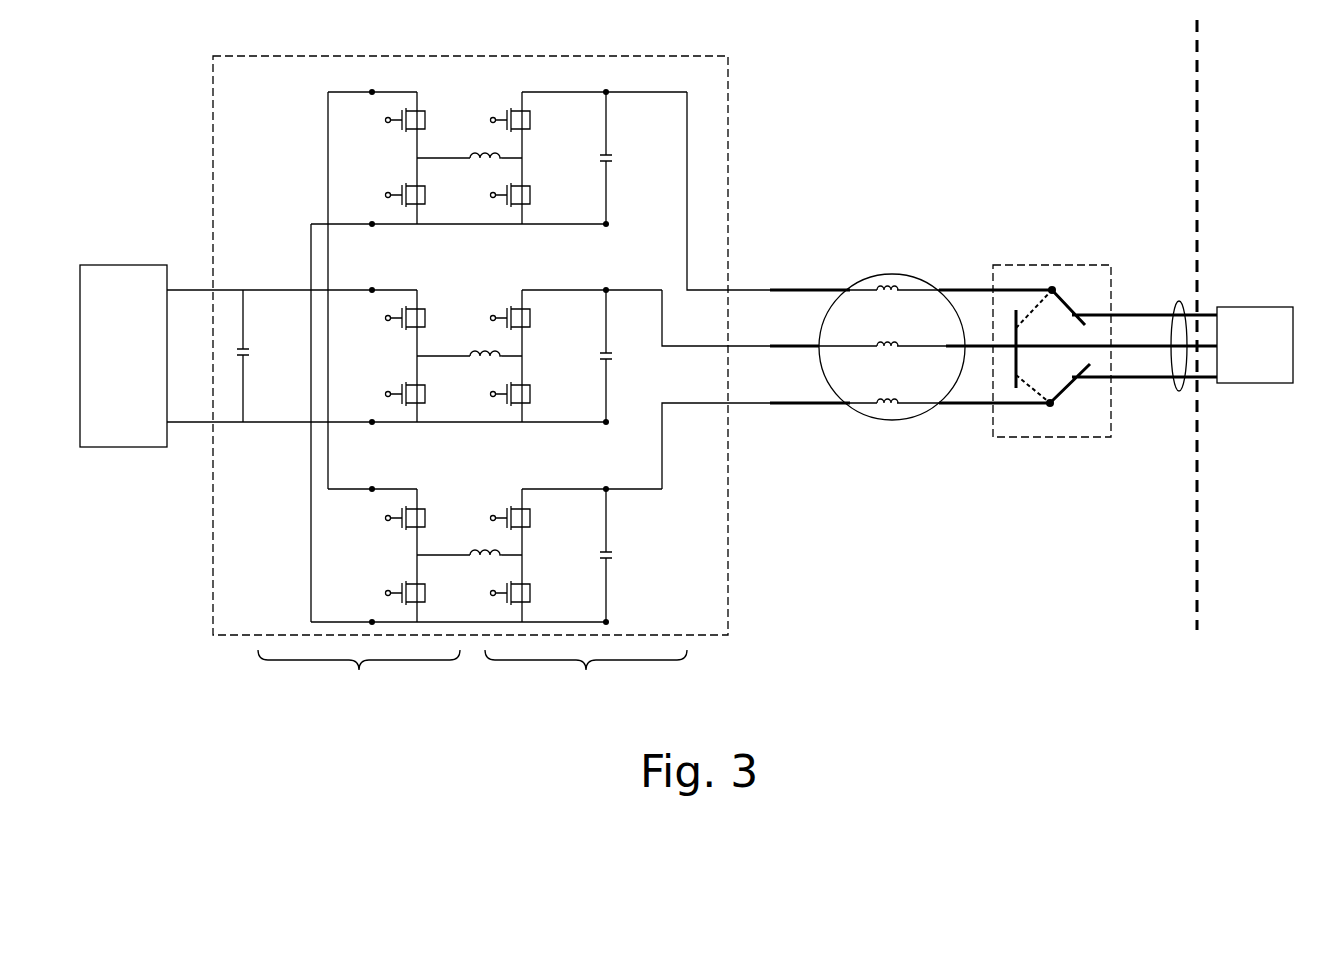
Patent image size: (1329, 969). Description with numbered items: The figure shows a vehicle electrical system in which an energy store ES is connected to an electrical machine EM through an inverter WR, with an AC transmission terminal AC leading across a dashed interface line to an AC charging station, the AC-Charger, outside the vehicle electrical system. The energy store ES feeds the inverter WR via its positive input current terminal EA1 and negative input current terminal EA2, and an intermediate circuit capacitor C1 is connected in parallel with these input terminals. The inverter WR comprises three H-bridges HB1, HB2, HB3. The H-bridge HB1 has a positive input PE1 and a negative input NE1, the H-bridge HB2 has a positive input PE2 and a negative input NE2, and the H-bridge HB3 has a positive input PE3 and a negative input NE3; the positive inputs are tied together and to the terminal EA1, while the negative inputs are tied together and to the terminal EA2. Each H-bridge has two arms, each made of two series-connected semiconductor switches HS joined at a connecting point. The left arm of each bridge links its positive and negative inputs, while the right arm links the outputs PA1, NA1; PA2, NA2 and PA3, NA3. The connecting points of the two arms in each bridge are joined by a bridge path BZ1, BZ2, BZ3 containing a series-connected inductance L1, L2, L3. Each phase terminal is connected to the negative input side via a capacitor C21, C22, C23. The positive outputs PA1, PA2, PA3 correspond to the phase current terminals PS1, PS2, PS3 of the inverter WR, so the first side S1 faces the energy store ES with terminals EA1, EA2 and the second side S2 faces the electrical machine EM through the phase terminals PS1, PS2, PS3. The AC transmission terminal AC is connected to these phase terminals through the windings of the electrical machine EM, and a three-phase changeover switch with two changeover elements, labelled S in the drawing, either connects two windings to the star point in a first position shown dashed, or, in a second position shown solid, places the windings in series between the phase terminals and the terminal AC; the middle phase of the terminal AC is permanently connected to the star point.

The inverter WR is at (470, 345).
The energy store ES is at (123, 356).
The positive input current terminal EA1 is at (207, 290).
The negative input current terminal EA2 is at (207, 422).
The intermediate circuit capacitor C1 is at (258, 356).
The positive input PE1 is at (372, 83).
The positive input PE2 is at (358, 281).
The positive input PE3 is at (372, 480).
The negative input NE1 is at (416, 215).
The negative input NE2 is at (416, 413).
The negative input NE3 is at (416, 613).
The positive output PA1 is at (604, 83).
The positive output PA2 is at (592, 281).
The positive output PA3 is at (592, 480).
The negative output NA1 is at (573, 215).
The negative output NA2 is at (573, 413).
The negative output NA3 is at (573, 613).
The H-bridge HB1 is at (484, 111).
The H-bridge HB2 is at (484, 309).
The H-bridge HB3 is at (484, 508).
The bridge path BZ1 is at (460, 158).
The bridge path BZ2 is at (460, 356).
The bridge path BZ3 is at (460, 555).
The inductance L1 is at (496, 166).
The inductance L2 is at (496, 364).
The inductance L3 is at (496, 563).
The capacitor C21 is at (612, 158).
The capacitor C22 is at (612, 356).
The capacitor C23 is at (612, 555).
The semiconductor switch HS is at (413, 131).
The phase current terminal PS1 is at (717, 290).
The phase current terminal PS2 is at (718, 346).
The phase current terminal PS3 is at (718, 403).
The electrical machine EM is at (892, 347).
The switch S is at (1002, 360).
The AC transmission terminal AC is at (1174, 318).
The AC charger AC-Charger is at (1255, 345).
The first side S1 is at (359, 681).
The second side S2 is at (586, 681).